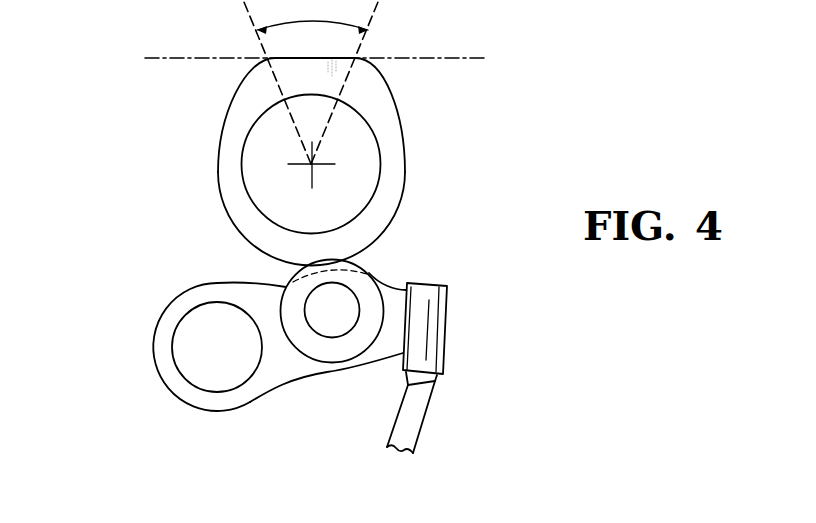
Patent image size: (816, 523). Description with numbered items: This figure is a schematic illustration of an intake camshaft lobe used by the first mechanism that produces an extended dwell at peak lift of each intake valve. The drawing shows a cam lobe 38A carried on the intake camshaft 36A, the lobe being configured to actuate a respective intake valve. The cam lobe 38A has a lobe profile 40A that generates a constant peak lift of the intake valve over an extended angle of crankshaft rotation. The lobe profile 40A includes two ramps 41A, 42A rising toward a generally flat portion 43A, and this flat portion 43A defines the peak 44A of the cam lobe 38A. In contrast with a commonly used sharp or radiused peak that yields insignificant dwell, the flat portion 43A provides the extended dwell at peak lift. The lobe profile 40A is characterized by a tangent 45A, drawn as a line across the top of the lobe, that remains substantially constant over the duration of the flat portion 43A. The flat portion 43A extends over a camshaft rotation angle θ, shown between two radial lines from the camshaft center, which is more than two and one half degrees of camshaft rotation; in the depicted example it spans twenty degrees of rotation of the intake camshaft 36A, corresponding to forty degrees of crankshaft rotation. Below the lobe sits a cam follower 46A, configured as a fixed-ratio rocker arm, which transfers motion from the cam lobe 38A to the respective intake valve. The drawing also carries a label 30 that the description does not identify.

The valve train assembly 30 is at (582, 0).
The intake camshaft 36A is at (340, 189).
The cam lobe 38A is at (524, 145).
The lobe profile 40A is at (381, 236).
The ramp 41A is at (232, 100).
The ramp 42A is at (394, 104).
The flat portion 43A is at (292, 58).
The peak 44A is at (312, 60).
The tangent 45A is at (147, 58).
The cam follower 46A is at (135, 345).